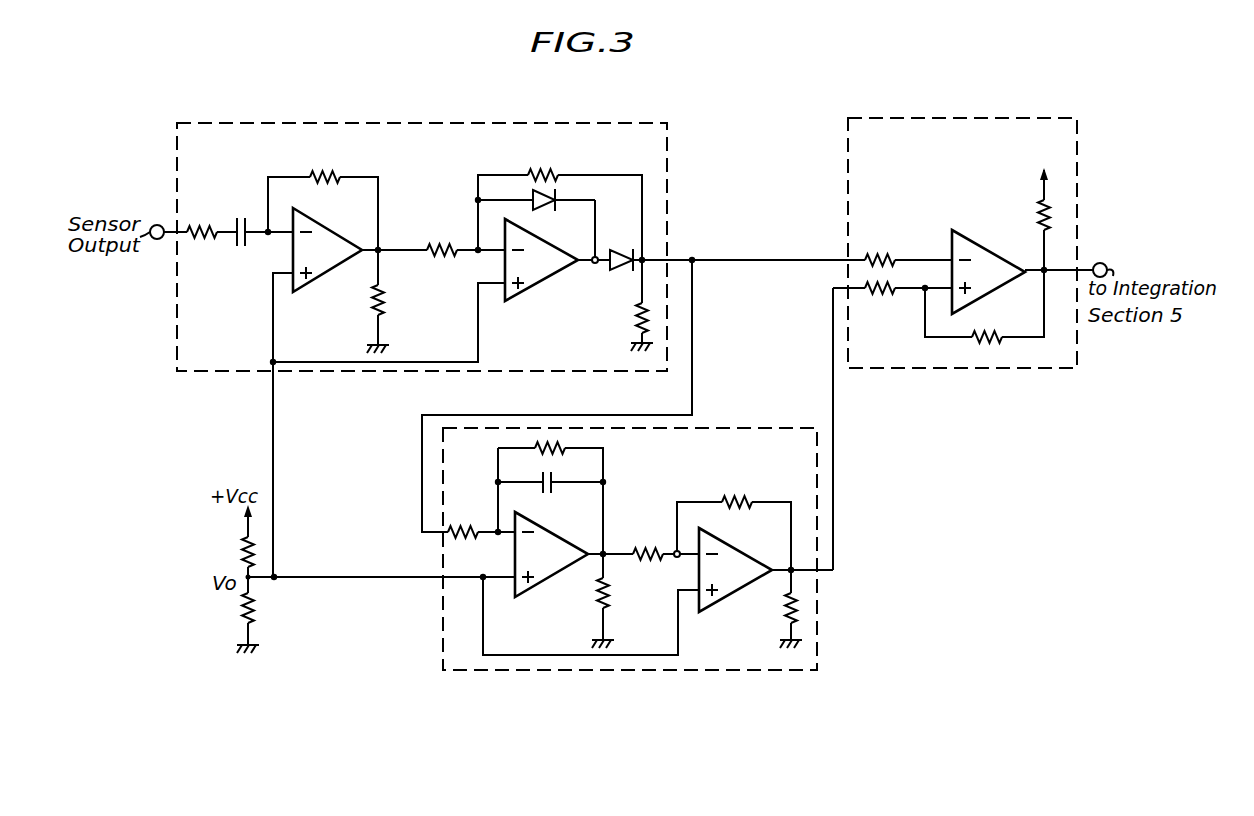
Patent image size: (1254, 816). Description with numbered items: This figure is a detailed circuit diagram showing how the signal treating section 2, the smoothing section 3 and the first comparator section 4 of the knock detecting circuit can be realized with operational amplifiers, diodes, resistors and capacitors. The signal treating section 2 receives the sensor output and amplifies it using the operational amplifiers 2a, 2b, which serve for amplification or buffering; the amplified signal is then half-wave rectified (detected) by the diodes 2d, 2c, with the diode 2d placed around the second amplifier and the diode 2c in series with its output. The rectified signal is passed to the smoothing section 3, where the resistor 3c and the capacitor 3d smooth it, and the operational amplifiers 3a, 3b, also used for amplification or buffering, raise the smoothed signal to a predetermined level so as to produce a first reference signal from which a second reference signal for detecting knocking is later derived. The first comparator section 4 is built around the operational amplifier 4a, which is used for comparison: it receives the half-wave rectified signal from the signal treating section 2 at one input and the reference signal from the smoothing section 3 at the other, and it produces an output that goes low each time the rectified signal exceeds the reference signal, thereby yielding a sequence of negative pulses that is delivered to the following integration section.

The signal treating section 2 is at (637, 122).
The operational amplifier 2a is at (327, 275).
The operational amplifier 2b is at (533, 287).
The diode 2c is at (618, 275).
The diode 2d is at (553, 193).
The smoothing section 3 is at (818, 648).
The operational amplifier 3a is at (545, 580).
The operational amplifier 3b is at (728, 596).
The resistor 3c is at (458, 536).
The capacitor 3d is at (553, 470).
The first comparator section 4 is at (1045, 118).
The operational amplifier 4a is at (983, 240).